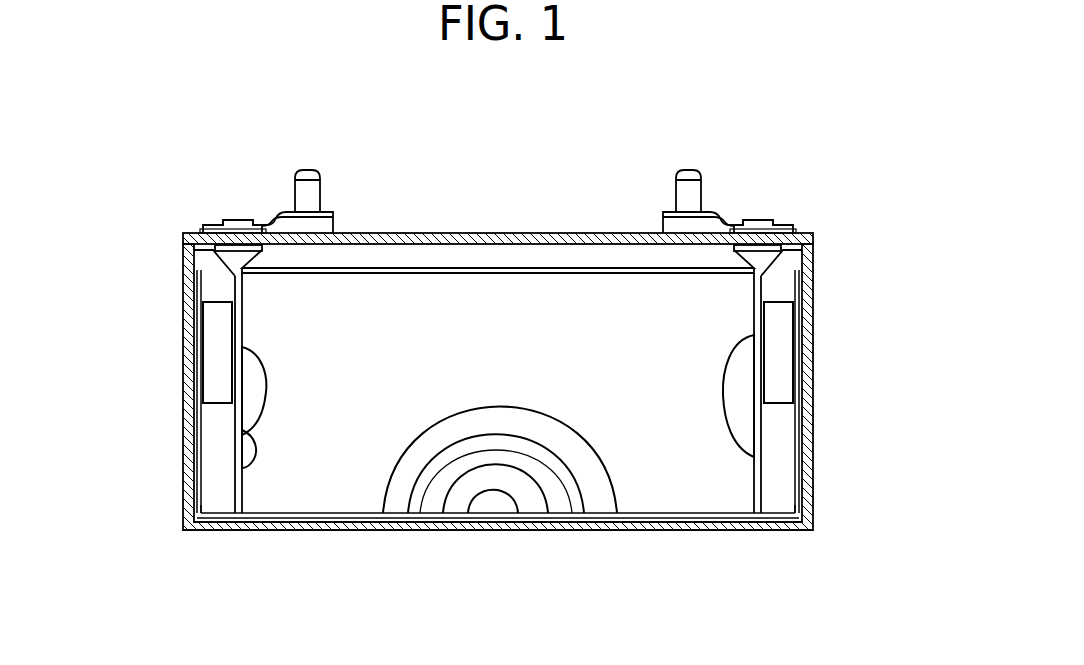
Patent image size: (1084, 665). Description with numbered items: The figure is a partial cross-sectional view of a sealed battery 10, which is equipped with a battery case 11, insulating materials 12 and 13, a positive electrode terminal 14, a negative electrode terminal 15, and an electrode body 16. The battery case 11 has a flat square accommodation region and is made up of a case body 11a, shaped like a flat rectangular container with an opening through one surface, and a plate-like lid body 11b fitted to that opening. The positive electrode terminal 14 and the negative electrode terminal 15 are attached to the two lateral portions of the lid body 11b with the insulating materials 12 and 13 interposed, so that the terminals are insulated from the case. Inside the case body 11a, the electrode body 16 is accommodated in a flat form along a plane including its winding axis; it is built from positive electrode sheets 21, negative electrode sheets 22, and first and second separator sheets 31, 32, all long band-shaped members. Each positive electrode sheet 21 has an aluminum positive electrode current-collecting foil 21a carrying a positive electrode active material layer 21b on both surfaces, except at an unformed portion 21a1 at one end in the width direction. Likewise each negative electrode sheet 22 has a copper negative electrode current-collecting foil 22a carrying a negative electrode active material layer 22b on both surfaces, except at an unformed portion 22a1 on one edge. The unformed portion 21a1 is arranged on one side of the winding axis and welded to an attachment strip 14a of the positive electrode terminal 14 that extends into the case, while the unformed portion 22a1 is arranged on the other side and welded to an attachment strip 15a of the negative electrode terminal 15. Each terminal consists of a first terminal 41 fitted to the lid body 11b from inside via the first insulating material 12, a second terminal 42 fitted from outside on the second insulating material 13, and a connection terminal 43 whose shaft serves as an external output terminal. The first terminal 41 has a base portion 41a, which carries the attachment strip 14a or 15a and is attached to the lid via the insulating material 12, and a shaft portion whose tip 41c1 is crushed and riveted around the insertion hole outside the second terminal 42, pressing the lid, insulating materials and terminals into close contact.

The sealed battery 10 is at (850, 125).
The battery case 11 is at (542, 343).
The case body 11a is at (818, 405).
The lid body 11b is at (425, 233).
The first insulating material 12 is at (218, 250).
The second insulating material 13 is at (198, 233).
The positive electrode terminal 14 is at (272, 170).
The attachment strip 14a is at (210, 367).
The negative electrode terminal 15 is at (733, 170).
The attachment strip 15a is at (786, 355).
The electrode body 16 is at (660, 482).
The positive electrode sheet 21 is at (457, 510).
The positive electrode current-collecting foil 21a is at (196, 466).
The unformed portion 21a1 is at (215, 502).
The positive electrode active material layer 21b is at (257, 387).
The negative electrode sheet 22 is at (393, 510).
The negative electrode current-collecting foil 22a is at (800, 462).
The unformed portion 22a1 is at (778, 502).
The negative electrode active material layer 22b is at (250, 447).
The first separator sheet 31 is at (430, 510).
The second separator sheet 32 is at (327, 505).
The first terminal 41 is at (263, 251).
The base portion 41a is at (241, 273).
The tip 41c1 is at (240, 221).
The second terminal 42 is at (336, 213).
The connection terminal 43 is at (323, 184).